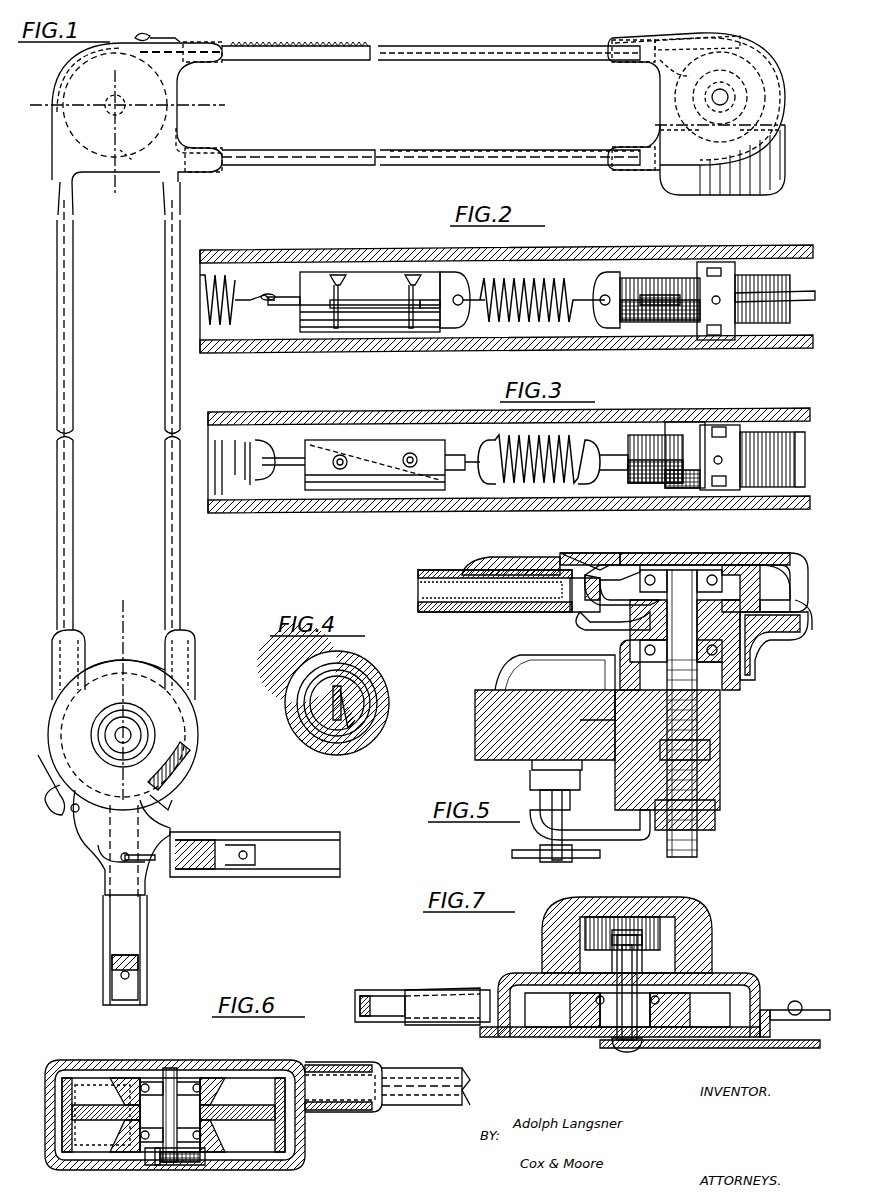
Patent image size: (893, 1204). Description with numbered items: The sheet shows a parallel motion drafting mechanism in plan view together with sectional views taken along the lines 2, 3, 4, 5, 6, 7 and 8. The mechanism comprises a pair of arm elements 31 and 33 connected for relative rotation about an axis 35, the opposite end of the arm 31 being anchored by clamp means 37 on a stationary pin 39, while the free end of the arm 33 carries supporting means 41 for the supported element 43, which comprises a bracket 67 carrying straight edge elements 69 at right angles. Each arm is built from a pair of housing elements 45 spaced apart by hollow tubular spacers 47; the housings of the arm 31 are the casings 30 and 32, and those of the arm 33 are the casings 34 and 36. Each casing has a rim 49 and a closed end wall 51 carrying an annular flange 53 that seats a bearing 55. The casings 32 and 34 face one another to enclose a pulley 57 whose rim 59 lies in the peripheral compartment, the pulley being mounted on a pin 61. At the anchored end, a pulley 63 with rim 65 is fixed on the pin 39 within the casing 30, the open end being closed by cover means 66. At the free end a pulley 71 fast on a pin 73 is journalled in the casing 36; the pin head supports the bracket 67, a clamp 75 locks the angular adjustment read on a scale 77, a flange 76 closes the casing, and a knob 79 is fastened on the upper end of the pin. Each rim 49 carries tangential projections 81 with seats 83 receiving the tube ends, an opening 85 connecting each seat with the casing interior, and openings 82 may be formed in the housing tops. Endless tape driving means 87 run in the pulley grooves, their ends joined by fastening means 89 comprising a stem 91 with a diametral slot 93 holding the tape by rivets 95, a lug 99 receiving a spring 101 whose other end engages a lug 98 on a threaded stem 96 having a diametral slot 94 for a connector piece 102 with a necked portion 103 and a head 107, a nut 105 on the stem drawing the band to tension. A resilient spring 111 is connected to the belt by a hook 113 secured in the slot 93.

In FIG. 1, the section line 2— 2 is at (315, 48).
In FIG. 2, the section line 3— 3 is at (215, 303).
In FIG. 1, the section line 4— 4 is at (347, 70).
In FIG. 1, the section line 5— 5 is at (568, 48).
In FIG. 1, the section line 6— 6 is at (43, 82).
In FIG. 1, the section line 7— 7 is at (120, 622).
In FIG. 6, the section line 8- 8 is at (50, 1065).
In FIG. 7, the section line 8- 8 is at (482, 1065).
In FIG. 1, the housing element 30 is at (658, 94).
In FIG. 1, the arm element 31 is at (432, 176).
In FIG. 1, the housing element 32 is at (178, 90).
In FIG. 6, the housing element 32 is at (58, 1047).
In FIG. 1, the arm element 33 is at (207, 568).
In FIG. 1, the housing element 34 is at (180, 135).
In FIG. 6, the housing element 34 is at (64, 1188).
In FIG. 1, the axis 35 is at (112, 90).
In FIG. 6, the axis 35 is at (170, 1068).
In FIG. 1, the housing element 36 is at (128, 680).
In FIG. 7, the housing element 36 is at (750, 964).
In FIG. 1, the clamp means 37 is at (793, 183).
In FIG. 5, the clamp means 37 is at (597, 758).
In FIG. 5, the stationary pin 39 is at (680, 578).
In FIG. 1, the supporting means 41 is at (200, 812).
In FIG. 7, the supporting means 41 is at (798, 1004).
In FIG. 1, the supported element 43 is at (178, 903).
In FIG. 1, the housing element 45 is at (58, 75).
In FIG. 1, the tubular spacer 47 is at (325, 150).
In FIG. 2, the tubular spacer 47 is at (265, 258).
In FIG. 3, the tubular spacer 47 is at (280, 513).
In FIG. 4, the tubular spacer 47 is at (360, 742).
In FIG. 5, the tubular spacer 47 is at (425, 612).
In FIG. 6, the tubular spacer 47 is at (440, 1100).
In FIG. 5, the rim 49 is at (810, 630).
In FIG. 6, the rim 49 is at (312, 1075).
In FIG. 7, the rim 49 is at (770, 990).
In FIG. 5, the end wall 51 is at (752, 565).
In FIG. 6, the end wall 51 is at (85, 1078).
In FIG. 7, the end wall 51 is at (710, 973).
In FIG. 5, the annular flange 53 is at (765, 580).
In FIG. 6, the annular flange 53 is at (128, 1070).
In FIG. 7, the annular flange 53 is at (585, 1030).
In FIG. 5, the bearing 55 is at (712, 578).
In FIG. 6, the bearing 55 is at (198, 1088).
In FIG. 7, the bearing 55 is at (627, 1000).
In FIG. 1, the pulley 57 is at (130, 160).
In FIG. 6, the rim 59 is at (68, 1078).
In FIG. 6, the pin 61 is at (172, 1165).
In FIG. 1, the pulley 63 is at (670, 112).
In FIG. 5, the rim 65 is at (595, 575).
In FIG. 6, the rim 65 is at (148, 1165).
In FIG. 5, the cover means 66 is at (775, 660).
In FIG. 1, the bracket 67 is at (112, 884).
In FIG. 6, the bracket 67 is at (92, 1100).
In FIG. 1, the straight edge element 69 is at (310, 878).
In FIG. 1, the pulley 71 is at (180, 712).
In FIG. 7, the pulley 71 is at (652, 1035).
In FIG. 7, the pin 73 is at (612, 1045).
In FIG. 1, the clamp 75 is at (58, 815).
In FIG. 7, the outstanding flange 76 is at (735, 1052).
In FIG. 1, the scale 77 is at (190, 778).
In FIG. 7, the knob 79 is at (548, 905).
In FIG. 1, the projection 81 is at (200, 40).
In FIG. 6, the projection 81 is at (372, 1098).
In FIG. 1, the opening 82 is at (690, 42).
In FIG. 5, the seat 83 is at (575, 615).
In FIG. 5, the opening 85 is at (545, 557).
In FIG. 1, the flexible driving means 87 is at (450, 150).
In FIG. 4, the flexible driving means 87 is at (320, 718).
In FIG. 5, the flexible driving means 87 is at (428, 572).
In FIG. 6, the flexible driving means 87 is at (332, 1088).
In FIG. 7, the flexible driving means 87 is at (378, 1036).
In FIG. 1, the fastening means 89 is at (378, 62).
In FIG. 2, the stem 91 is at (365, 335).
In FIG. 3, the stem 91 is at (375, 495).
In FIG. 2, the diametral slot 93 is at (378, 270).
In FIG. 2, the diametral slot 94 is at (648, 285).
In FIG. 2, the rivet 95 is at (338, 272).
In FIG. 3, the rivet 95 is at (340, 470).
In FIG. 2, the threaded stem 96 is at (770, 275).
In FIG. 3, the threaded stem 96 is at (650, 435).
In FIG. 2, the lug 98 is at (602, 280).
In FIG. 3, the lug 98 is at (618, 455).
In FIG. 2, the lug 99 is at (460, 272).
In FIG. 3, the lug 99 is at (455, 455).
In FIG. 2, the spring 101 is at (528, 275).
In FIG. 3, the spring 101 is at (532, 459).
In FIG. 2, the connector piece 102 is at (672, 330).
In FIG. 3, the connector piece 102 is at (680, 490).
In FIG. 2, the necked portion 103 is at (800, 310).
In FIG. 3, the necked portion 103 is at (785, 432).
In FIG. 2, the nut 105 is at (712, 262).
In FIG. 3, the nut 105 is at (728, 428).
In FIG. 3, the head 107 is at (680, 432).
In FIG. 1, the resilient spring 111 is at (288, 46).
In FIG. 3, the resilient spring 111 is at (232, 513).
In FIG. 4, the resilient spring 111 is at (300, 682).
In FIG. 6, the resilient spring 111 is at (408, 1062).
In FIG. 7, the resilient spring 111 is at (425, 1040).
In FIG. 2, the hook 113 is at (278, 280).
In FIG. 3, the hook 113 is at (275, 440).